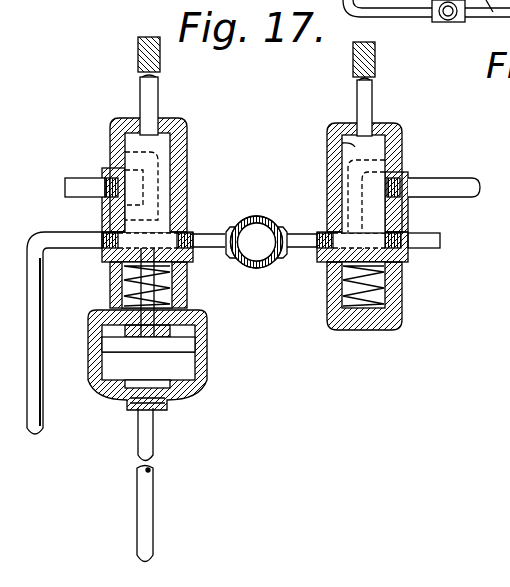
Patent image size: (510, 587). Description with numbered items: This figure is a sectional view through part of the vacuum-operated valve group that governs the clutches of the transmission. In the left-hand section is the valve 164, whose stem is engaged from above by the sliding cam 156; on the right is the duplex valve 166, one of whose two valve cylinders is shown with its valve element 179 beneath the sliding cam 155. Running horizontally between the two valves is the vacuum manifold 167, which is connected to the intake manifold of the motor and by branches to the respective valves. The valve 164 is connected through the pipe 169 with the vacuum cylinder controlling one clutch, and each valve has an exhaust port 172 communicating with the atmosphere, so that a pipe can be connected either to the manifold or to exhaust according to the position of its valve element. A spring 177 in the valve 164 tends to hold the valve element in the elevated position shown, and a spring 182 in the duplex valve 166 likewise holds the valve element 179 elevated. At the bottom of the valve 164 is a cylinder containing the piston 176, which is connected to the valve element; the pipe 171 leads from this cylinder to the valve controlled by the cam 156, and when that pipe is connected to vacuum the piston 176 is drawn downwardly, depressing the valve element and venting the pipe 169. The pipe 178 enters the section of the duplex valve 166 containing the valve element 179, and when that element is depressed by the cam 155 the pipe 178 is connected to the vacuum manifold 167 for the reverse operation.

The sliding cam 155 is at (375, 57).
The sliding cam 156 is at (136, 43).
The valve 164 is at (205, 385).
The duplex valve 166 is at (370, 330).
The vacuum manifold 167 is at (262, 205).
The pipe 169 is at (35, 292).
The pipe 171 is at (150, 450).
The exhaust port 172 is at (72, 178).
The piston 176 is at (190, 346).
The spring 177 is at (183, 287).
The pipe 178 is at (462, 178).
The valve element 179 is at (355, 147).
The spring 182 is at (385, 287).